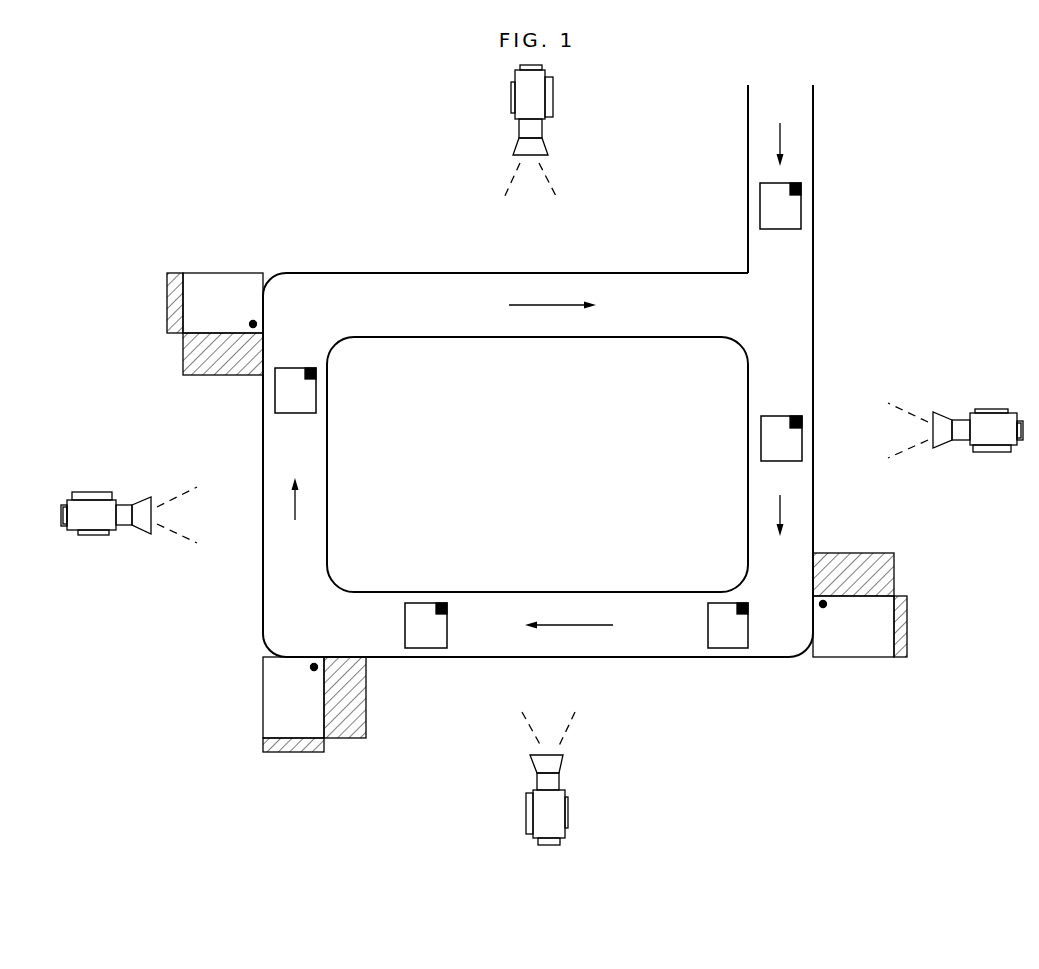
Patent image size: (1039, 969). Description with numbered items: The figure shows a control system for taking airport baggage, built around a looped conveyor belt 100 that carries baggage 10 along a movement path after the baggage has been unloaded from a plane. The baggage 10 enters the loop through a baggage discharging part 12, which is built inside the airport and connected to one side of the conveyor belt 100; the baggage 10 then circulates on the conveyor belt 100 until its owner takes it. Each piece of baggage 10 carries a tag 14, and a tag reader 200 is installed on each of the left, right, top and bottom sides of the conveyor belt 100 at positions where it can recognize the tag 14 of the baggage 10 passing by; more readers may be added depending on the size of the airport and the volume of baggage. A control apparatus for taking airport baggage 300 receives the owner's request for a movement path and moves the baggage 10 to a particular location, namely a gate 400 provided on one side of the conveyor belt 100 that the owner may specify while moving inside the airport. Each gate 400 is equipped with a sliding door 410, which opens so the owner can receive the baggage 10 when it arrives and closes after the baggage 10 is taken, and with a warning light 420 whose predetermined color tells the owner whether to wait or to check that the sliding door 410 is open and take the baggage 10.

The baggage 10 is at (801, 210).
The baggage discharging part 12 is at (813, 122).
The tag 14 is at (801, 190).
The conveyor belt 100 is at (325, 290).
The tag reader 200 is at (553, 98).
The control apparatus for taking airport baggage 300 is at (192, 358).
The gate 400 is at (201, 281).
The sliding door 410 is at (172, 300).
The warning light 420 is at (253, 322).